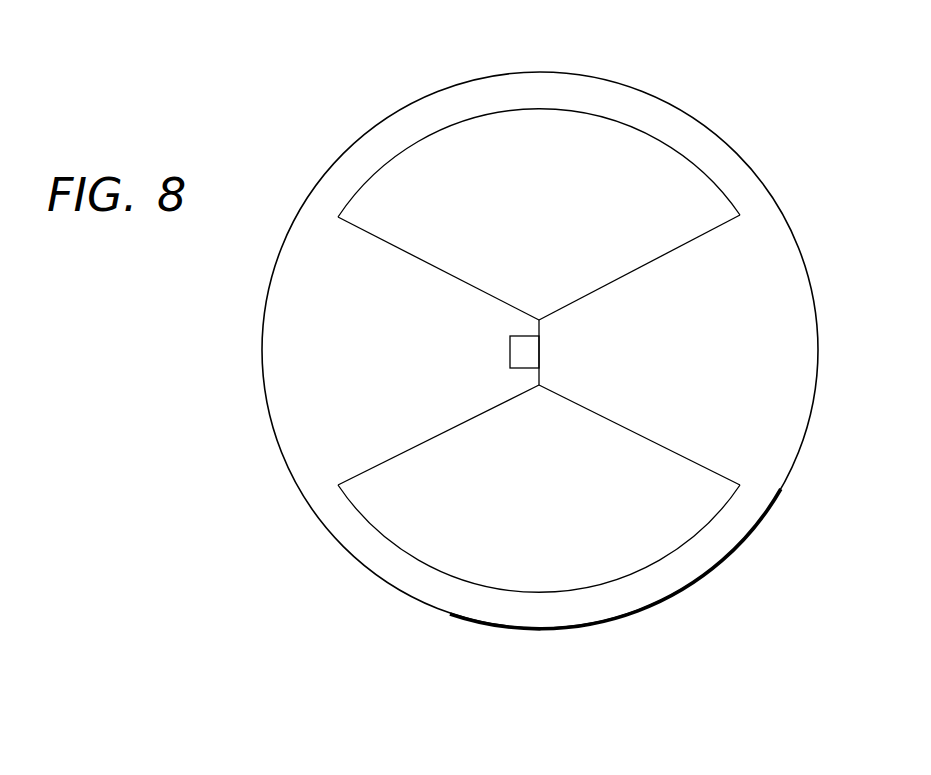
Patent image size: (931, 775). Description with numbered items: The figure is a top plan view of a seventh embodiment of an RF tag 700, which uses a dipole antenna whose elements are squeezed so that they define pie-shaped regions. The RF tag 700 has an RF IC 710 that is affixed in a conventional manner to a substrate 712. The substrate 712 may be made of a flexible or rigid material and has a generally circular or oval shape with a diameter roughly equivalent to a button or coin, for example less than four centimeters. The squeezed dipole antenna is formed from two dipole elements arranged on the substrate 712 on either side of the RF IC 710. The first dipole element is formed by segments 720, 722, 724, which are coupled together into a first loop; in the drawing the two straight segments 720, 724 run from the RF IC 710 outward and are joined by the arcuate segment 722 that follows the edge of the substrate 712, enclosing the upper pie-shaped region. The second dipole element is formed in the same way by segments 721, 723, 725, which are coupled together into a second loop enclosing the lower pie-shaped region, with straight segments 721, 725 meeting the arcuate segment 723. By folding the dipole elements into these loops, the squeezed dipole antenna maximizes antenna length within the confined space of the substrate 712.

The RF tag 700 is at (306, 139).
The substrate 712 is at (800, 252).
The RF IC 710 is at (510, 352).
The segment 722 is at (538, 107).
The segment 723 is at (607, 583).
The segment 724 is at (440, 268).
The segment 720 is at (642, 267).
The segment 725 is at (440, 435).
The segment 721 is at (645, 436).